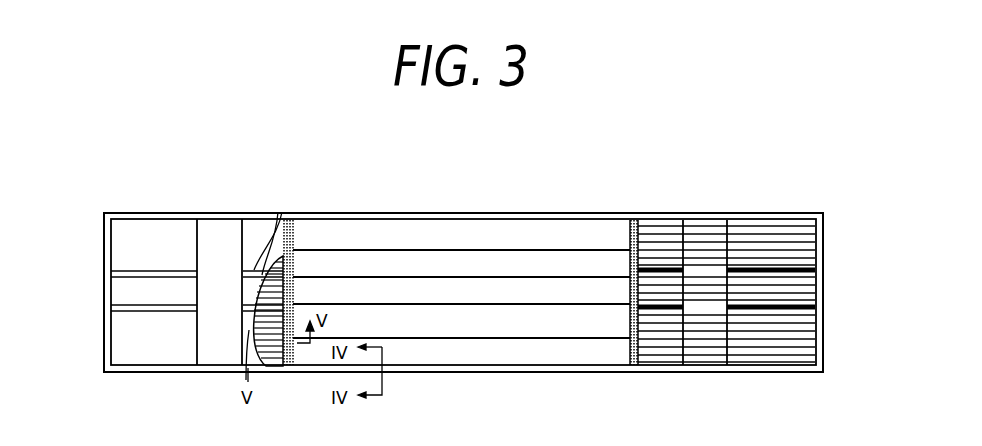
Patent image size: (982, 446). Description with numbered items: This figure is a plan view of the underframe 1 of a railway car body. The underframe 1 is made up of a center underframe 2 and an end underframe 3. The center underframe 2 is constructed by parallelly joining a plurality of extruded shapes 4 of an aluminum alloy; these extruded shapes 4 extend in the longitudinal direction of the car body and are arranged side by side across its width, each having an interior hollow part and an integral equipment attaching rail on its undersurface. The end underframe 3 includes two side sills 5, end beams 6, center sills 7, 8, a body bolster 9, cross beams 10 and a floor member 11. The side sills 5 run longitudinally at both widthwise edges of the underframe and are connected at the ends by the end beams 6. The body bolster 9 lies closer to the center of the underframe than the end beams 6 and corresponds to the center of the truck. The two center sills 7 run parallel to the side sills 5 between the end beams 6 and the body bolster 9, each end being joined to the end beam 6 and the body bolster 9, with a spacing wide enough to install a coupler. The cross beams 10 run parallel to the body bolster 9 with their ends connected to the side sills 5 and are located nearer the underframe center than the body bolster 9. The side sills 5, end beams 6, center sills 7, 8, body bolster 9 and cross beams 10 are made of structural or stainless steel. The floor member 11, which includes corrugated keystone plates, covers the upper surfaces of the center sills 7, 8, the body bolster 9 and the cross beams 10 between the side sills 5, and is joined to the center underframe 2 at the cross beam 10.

The underframe 1 is at (620, 133).
The center underframe 2 is at (452, 236).
The end underframe 3 is at (199, 214).
The extruded shape 4 is at (555, 228).
The side sill 5 is at (182, 216).
The end beam 6 is at (104, 240).
The center sill 7 is at (124, 276).
The center sill 8 is at (282, 225).
The body bolster 9 is at (228, 230).
The cross beam 10 is at (298, 232).
The floor member 11 is at (277, 368).